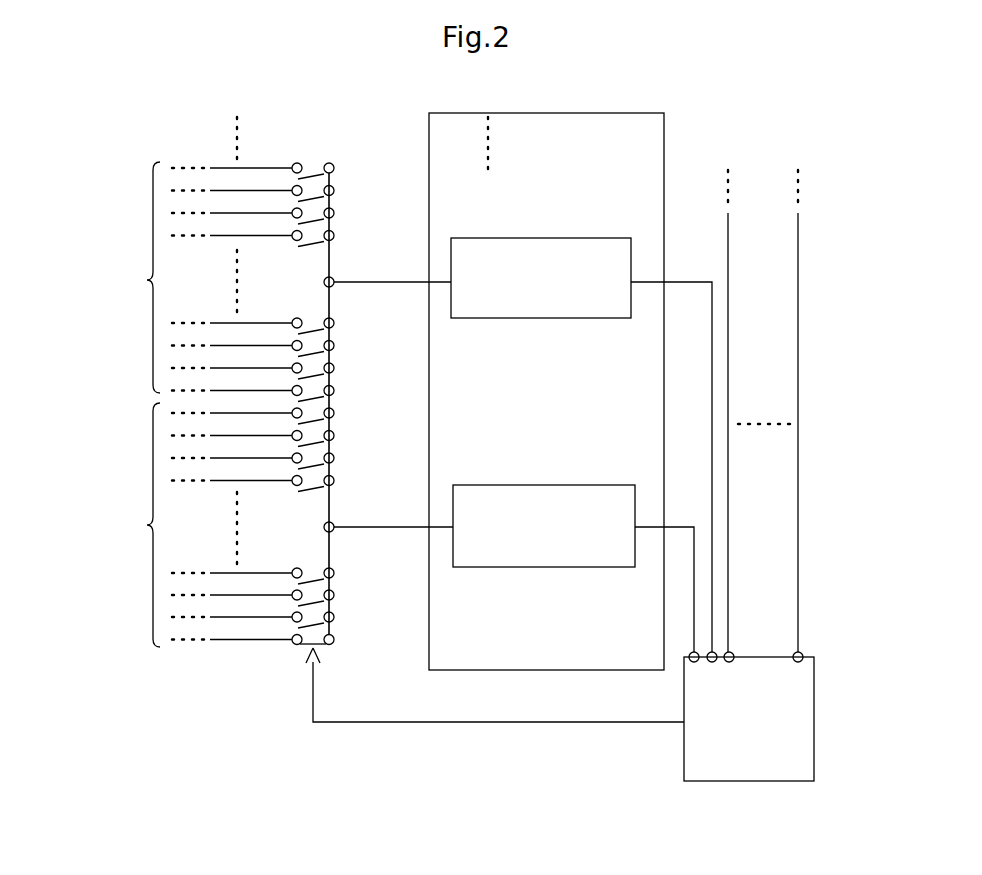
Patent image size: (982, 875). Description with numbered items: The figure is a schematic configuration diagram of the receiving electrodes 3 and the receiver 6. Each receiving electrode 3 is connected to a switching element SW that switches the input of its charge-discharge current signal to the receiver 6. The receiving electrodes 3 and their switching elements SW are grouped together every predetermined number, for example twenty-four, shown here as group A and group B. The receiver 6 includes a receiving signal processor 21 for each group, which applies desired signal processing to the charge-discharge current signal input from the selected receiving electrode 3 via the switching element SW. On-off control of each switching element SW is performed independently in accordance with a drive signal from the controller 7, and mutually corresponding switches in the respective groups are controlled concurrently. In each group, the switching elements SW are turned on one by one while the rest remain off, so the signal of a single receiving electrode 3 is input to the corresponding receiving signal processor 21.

The receiving electrode 3 is at (253, 618).
The receiver 6 is at (664, 125).
The receiving signal processor 21 is at (590, 318).
The controller 7 is at (760, 781).